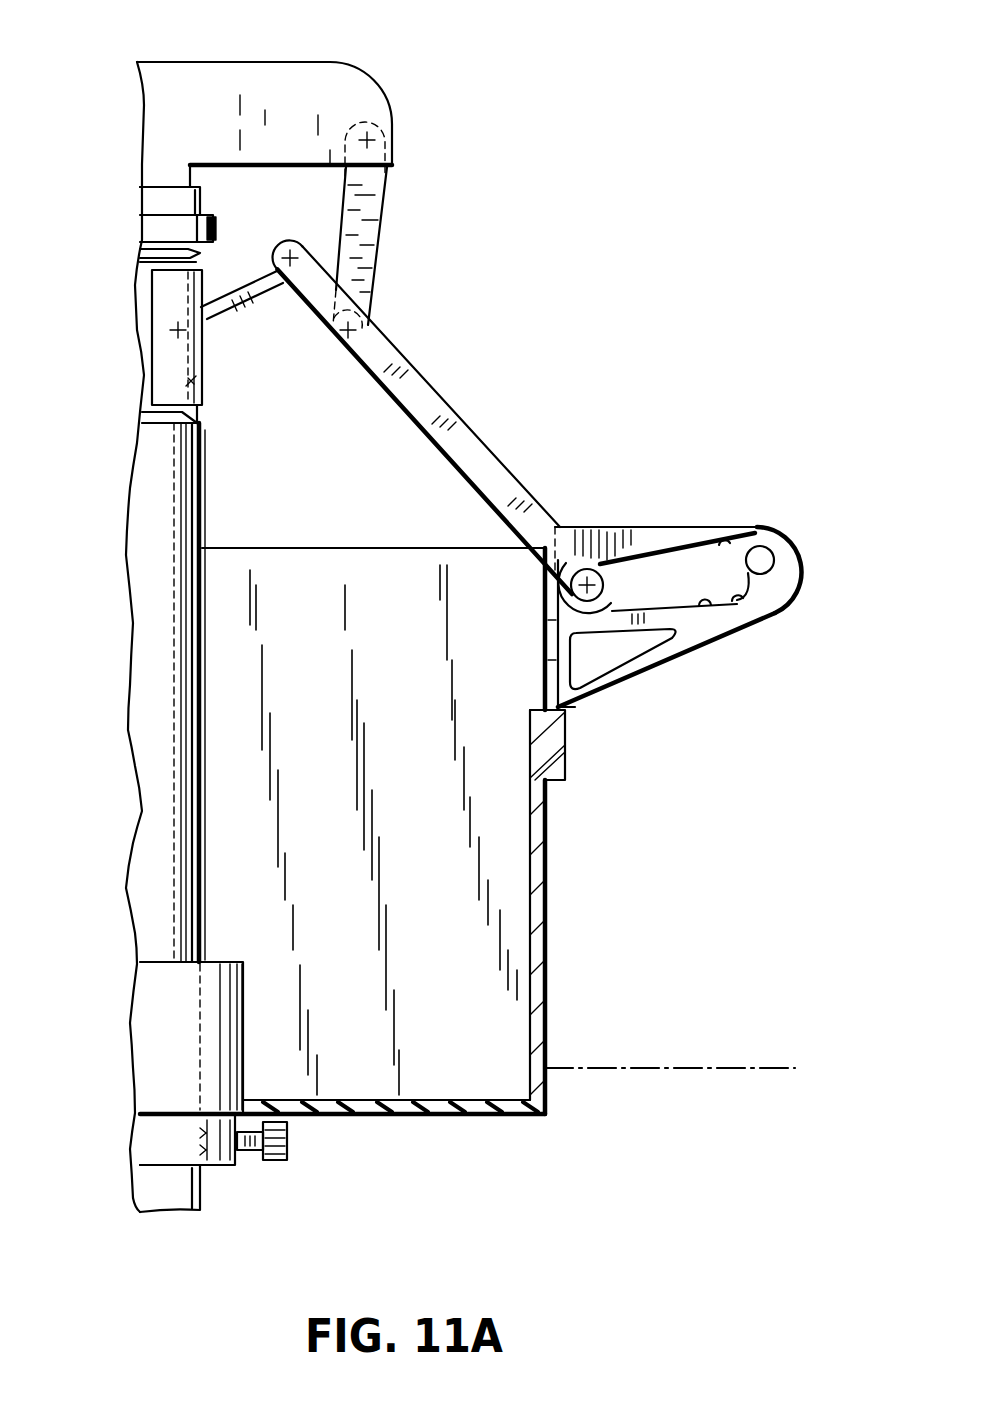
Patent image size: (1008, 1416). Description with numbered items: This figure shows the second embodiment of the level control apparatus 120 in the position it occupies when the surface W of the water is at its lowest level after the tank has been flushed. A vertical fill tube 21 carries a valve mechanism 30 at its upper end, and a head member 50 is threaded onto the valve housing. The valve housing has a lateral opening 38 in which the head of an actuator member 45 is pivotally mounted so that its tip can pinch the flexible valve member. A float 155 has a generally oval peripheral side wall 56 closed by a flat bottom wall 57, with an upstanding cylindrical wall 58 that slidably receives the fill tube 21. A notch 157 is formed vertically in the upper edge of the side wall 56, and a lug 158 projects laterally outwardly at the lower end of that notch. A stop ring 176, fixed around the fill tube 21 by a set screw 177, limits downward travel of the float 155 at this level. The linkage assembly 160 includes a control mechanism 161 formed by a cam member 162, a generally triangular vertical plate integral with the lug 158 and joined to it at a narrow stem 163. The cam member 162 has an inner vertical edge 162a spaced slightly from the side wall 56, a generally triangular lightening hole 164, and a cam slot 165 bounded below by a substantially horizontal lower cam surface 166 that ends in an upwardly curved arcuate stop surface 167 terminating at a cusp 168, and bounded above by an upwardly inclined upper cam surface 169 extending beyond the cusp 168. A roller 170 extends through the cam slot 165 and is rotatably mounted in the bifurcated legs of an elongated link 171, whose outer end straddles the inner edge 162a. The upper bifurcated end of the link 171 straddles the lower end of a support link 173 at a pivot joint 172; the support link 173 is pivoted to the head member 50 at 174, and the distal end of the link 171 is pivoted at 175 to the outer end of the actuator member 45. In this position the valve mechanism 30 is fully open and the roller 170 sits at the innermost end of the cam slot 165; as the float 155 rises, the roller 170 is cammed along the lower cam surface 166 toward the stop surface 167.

The fill tube 21 is at (150, 822).
The valve mechanism 30 is at (128, 374).
The lateral opening 38 is at (200, 380).
The actuator member 45 is at (249, 304).
The head member 50 is at (333, 14).
The peripheral side wall 56 is at (543, 952).
The bottom wall 57 is at (418, 1106).
The cylindrical wall 58 is at (160, 1050).
The level control apparatus 120 is at (770, 173).
The float 155 is at (566, 880).
The notch 157 is at (538, 688).
The lug 158 is at (558, 757).
The linkage assembly 160 is at (598, 258).
The control mechanism 161 is at (726, 513).
The cam member 162 is at (798, 585).
The inner vertical edge 162a is at (560, 590).
The narrow stem 163 is at (565, 712).
The lightening hole 164 is at (647, 645).
The cam slot 165 is at (680, 546).
The lower cam surface 166 is at (706, 606).
The stop surface 167 is at (762, 606).
The cusp 168 is at (780, 547).
The upper cam surface 169 is at (733, 537).
The roller 170 is at (620, 558).
The link 171 is at (497, 466).
The pivot joint 172 is at (343, 343).
The support link 173 is at (378, 197).
The pivot 174 is at (380, 128).
The pivot 175 is at (290, 255).
The stop ring 176 is at (160, 1133).
The set screw 177 is at (290, 1142).
The surface of the water W is at (710, 1068).